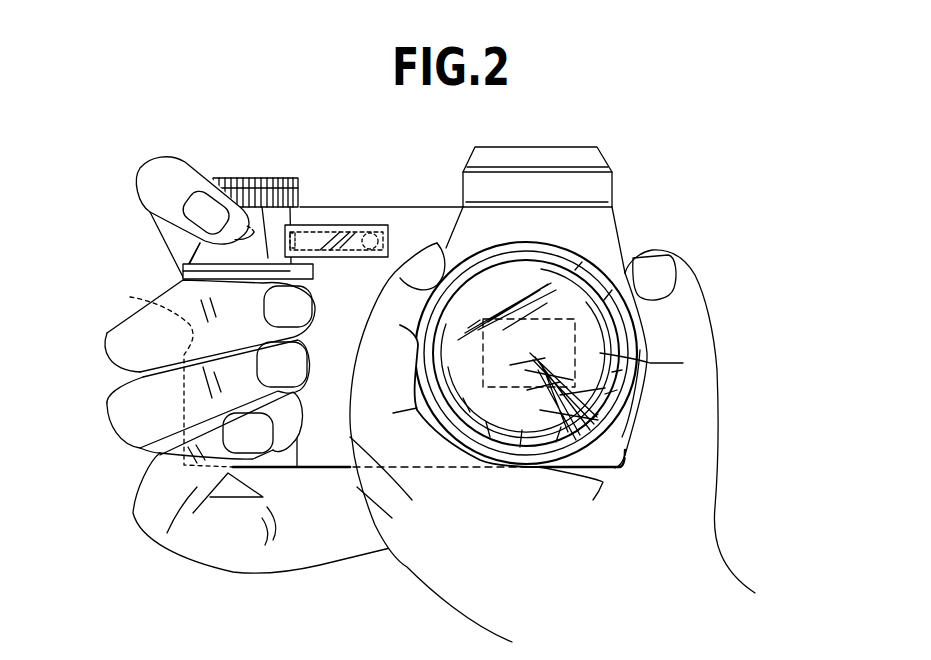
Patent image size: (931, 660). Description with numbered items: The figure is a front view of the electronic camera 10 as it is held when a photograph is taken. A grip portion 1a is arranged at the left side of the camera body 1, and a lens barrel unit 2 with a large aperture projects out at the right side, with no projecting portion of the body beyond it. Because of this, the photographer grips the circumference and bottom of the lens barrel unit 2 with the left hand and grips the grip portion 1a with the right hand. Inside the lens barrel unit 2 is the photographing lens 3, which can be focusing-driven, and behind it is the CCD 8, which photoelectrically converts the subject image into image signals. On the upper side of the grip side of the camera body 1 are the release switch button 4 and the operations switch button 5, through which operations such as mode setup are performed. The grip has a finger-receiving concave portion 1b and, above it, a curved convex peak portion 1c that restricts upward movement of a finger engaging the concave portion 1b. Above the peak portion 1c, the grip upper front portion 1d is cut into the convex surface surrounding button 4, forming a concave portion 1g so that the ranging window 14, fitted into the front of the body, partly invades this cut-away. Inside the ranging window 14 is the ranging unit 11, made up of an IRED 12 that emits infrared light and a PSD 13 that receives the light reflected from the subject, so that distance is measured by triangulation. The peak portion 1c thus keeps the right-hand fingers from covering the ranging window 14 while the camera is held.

The camera body 1 is at (580, 228).
The grip portion 1a is at (288, 420).
The finger-receiving concave portion 1b is at (163, 374).
The peak portion 1c is at (183, 272).
The grip upper front portion 1d is at (278, 248).
The concave portion 1g is at (290, 185).
The lens barrel unit 2 is at (573, 248).
The photographing lens 3 is at (650, 363).
The release switch button 4 is at (250, 208).
The operations switch button 5 is at (262, 178).
The CCD 8 is at (517, 388).
The electronic camera 10 is at (618, 180).
The ranging unit 11 is at (362, 180).
The IRED 12 is at (373, 232).
The PSD 13 is at (325, 230).
The ranging window 14 is at (292, 258).